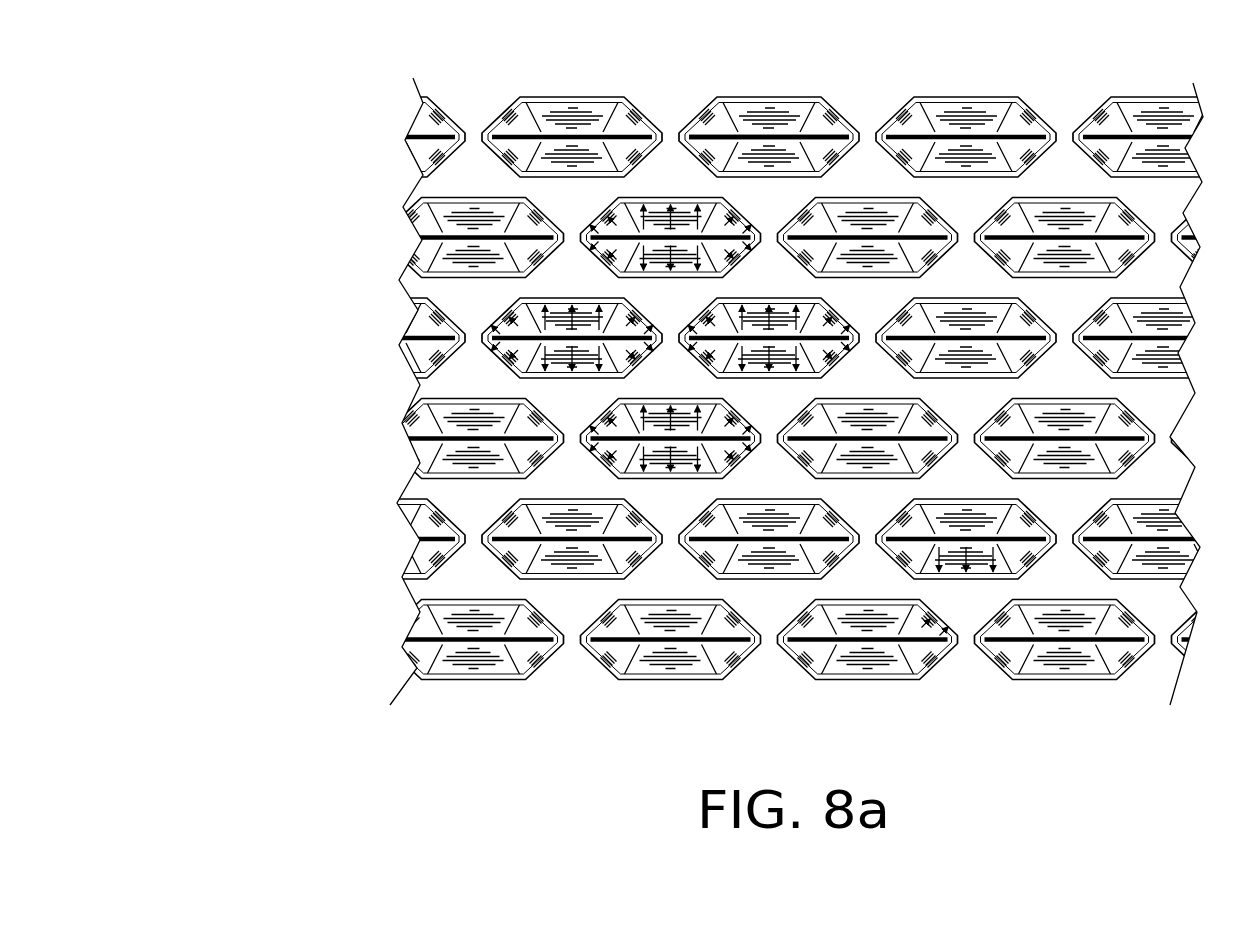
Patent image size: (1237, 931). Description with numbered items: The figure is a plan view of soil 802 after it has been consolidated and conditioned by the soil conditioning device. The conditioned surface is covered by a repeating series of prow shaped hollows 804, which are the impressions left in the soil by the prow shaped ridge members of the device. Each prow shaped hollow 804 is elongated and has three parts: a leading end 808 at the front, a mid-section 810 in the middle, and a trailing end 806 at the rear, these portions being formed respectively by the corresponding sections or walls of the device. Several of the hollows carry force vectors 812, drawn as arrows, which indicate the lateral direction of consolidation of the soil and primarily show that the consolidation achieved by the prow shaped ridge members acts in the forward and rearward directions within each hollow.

The cellular structural panel 802 is at (717, 411).
The prow shaped hollows 804 is at (1046, 678).
The trailing end 806 is at (830, 137).
The leading end 808 is at (706, 142).
The mid-section 810 is at (977, 107).
The force vectors 812 is at (730, 240).